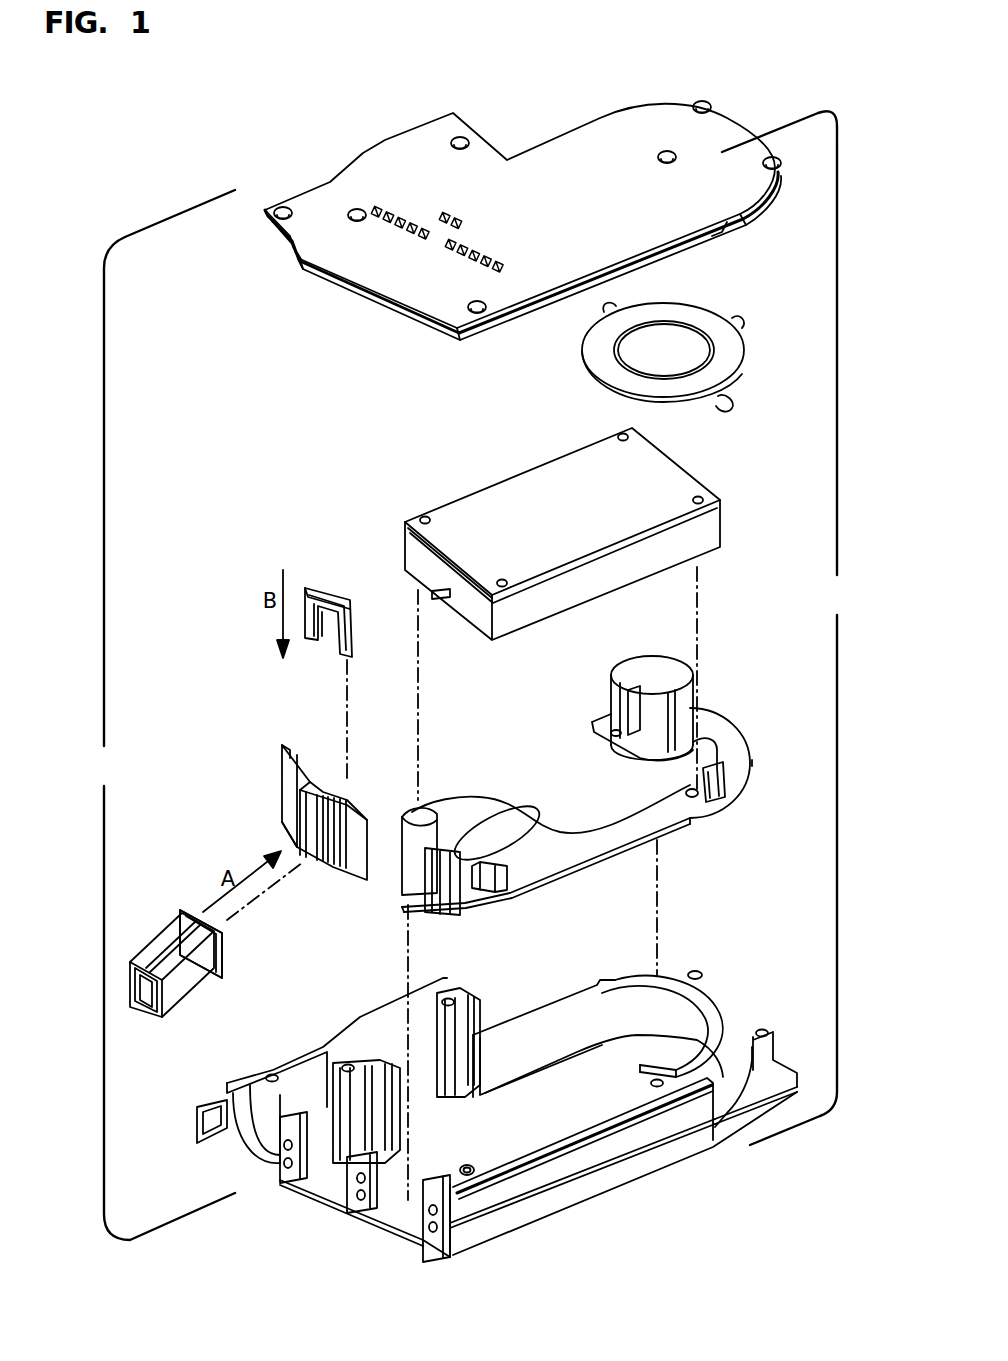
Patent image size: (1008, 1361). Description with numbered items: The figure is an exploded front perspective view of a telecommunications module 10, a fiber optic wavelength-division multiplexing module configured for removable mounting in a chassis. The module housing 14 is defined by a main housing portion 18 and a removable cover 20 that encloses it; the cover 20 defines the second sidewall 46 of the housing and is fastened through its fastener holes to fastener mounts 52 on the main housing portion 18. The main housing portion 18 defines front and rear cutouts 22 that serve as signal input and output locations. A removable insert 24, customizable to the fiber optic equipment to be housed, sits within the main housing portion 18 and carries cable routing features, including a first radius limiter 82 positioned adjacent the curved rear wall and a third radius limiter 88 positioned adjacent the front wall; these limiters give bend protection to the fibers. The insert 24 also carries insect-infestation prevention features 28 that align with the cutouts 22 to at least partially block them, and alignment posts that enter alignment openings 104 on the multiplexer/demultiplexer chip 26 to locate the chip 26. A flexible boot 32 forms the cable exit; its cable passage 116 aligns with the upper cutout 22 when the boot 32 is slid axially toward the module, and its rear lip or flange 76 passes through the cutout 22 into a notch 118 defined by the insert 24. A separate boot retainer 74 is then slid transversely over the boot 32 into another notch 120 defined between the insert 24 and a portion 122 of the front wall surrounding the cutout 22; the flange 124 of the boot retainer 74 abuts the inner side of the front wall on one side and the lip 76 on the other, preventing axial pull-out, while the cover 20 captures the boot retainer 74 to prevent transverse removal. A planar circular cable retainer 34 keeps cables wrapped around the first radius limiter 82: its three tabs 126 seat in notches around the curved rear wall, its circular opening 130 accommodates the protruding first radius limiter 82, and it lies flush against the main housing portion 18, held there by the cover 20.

The telecommunications module 10 is at (837, 575).
The module housing 14 is at (104, 746).
The main housing portion 18 is at (497, 1119).
The cover 20 is at (462, 137).
The cutouts 22 is at (449, 999).
The removable insert 24 is at (747, 783).
The multiplexer/demultiplexer chip 26 is at (579, 518).
The insect-infestation prevention features 28 is at (303, 794).
The flexible boot 32 is at (192, 984).
The cable retainer 34 is at (691, 334).
The second sidewall 46 is at (673, 220).
The fastener mounts 52 is at (470, 1168).
The boot retainer 74 is at (323, 581).
The rear lip or flange 76 is at (220, 968).
The first radius limiter 82 is at (690, 708).
The third radius limiter 88 is at (427, 810).
The alignment openings 104 is at (425, 518).
The cable passage 116 is at (150, 982).
The notch 118 is at (313, 830).
The notch 120 is at (350, 1160).
The portion of the front wall 122 is at (303, 1180).
The flange 124 is at (308, 597).
The tabs 126 is at (741, 322).
The circular opening 130 is at (650, 342).